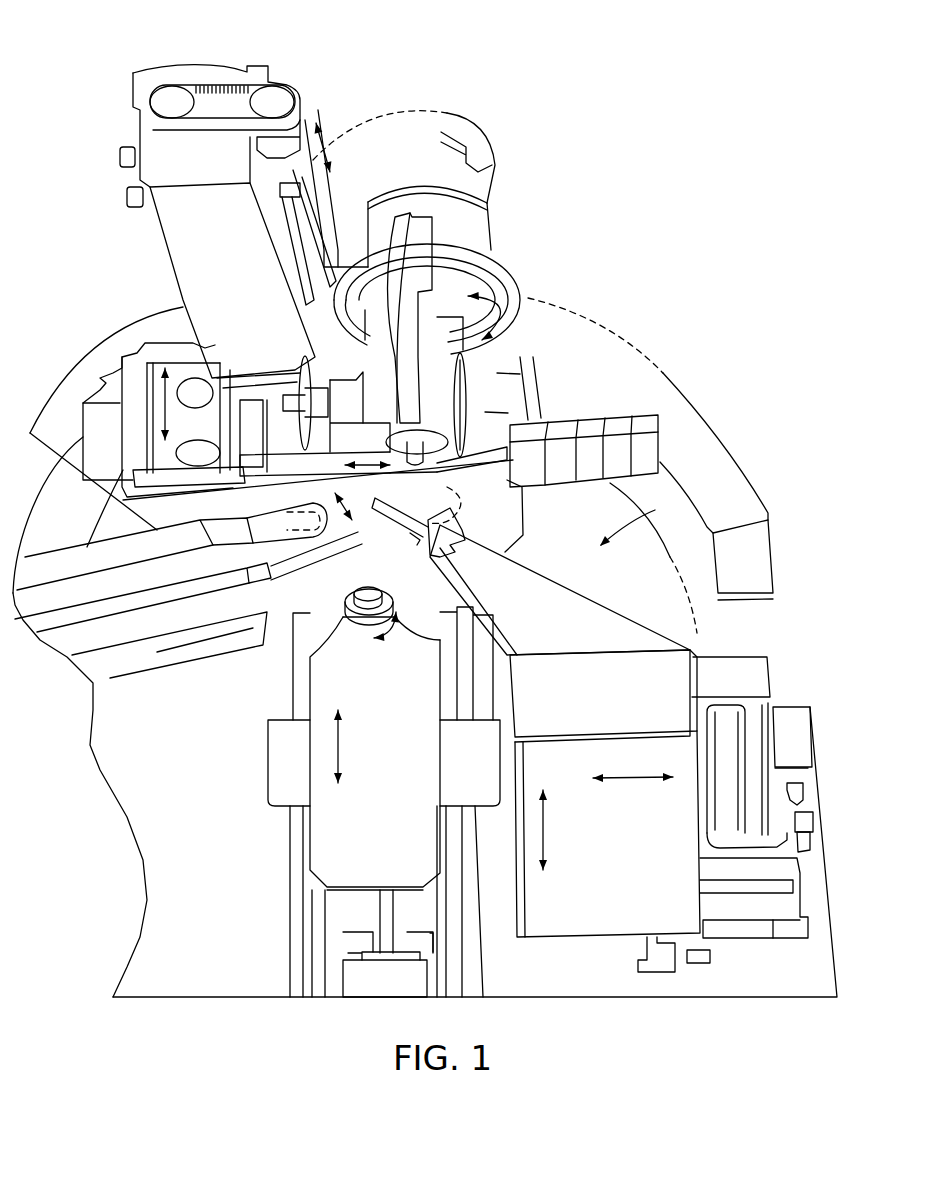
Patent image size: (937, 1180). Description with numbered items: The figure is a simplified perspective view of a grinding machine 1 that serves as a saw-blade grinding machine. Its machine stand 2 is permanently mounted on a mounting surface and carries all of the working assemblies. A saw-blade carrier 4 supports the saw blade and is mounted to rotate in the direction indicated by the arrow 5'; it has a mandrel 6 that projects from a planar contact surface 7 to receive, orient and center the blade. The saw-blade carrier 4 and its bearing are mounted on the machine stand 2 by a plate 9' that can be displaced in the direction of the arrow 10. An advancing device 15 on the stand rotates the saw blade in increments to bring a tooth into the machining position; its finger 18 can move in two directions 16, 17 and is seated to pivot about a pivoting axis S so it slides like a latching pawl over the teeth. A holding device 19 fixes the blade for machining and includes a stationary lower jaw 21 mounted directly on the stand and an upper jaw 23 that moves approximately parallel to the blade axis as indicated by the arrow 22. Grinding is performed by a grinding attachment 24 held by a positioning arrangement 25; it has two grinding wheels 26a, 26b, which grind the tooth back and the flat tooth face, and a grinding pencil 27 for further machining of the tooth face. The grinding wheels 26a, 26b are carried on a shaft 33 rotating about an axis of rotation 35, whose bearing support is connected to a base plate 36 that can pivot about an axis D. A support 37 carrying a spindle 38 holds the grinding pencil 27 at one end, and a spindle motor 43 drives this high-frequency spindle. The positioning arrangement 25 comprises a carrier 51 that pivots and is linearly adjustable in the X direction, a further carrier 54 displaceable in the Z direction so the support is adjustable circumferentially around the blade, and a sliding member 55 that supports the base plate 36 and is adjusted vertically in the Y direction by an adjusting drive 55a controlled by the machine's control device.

The grinding machine 1 is at (608, 215).
The machine stand 2 is at (657, 408).
The saw-blade carrier 4 is at (350, 623).
The arrow 5' is at (414, 651).
The mandrel 6 is at (367, 620).
The planar contact surface 7 is at (385, 592).
The plate 9' is at (384, 802).
The arrow 10 is at (340, 748).
The advancing device 15 is at (655, 510).
The direction 16 is at (548, 838).
The direction 17 is at (628, 778).
The finger 18 is at (393, 512).
The holding device 19 is at (291, 585).
The stationary lower jaw 21 is at (314, 559).
The arrow 22 is at (363, 517).
The upper jaw 23 is at (172, 546).
The grinding attachment 24 is at (365, 409).
The positioning arrangement 25 is at (227, 273).
The grinding wheel 26a is at (333, 461).
The grinding wheel 26b is at (470, 444).
The grinding pencil 27 is at (430, 437).
The shaft 33 is at (302, 404).
The axis of rotation 35 is at (284, 403).
The base plate 36 is at (448, 297).
The support 37 is at (512, 325).
The spindle 38 is at (540, 399).
The spindle motor 43 is at (540, 366).
The carrier 51 is at (270, 487).
The further carrier 54 is at (238, 368).
The sliding member 55 is at (333, 213).
The adjusting drive 55a is at (308, 78).
The axis D is at (504, 300).
The pivoting axis S is at (445, 500).
The X direction X is at (347, 462).
The Y direction Y is at (338, 140).
The Z direction Z is at (170, 405).